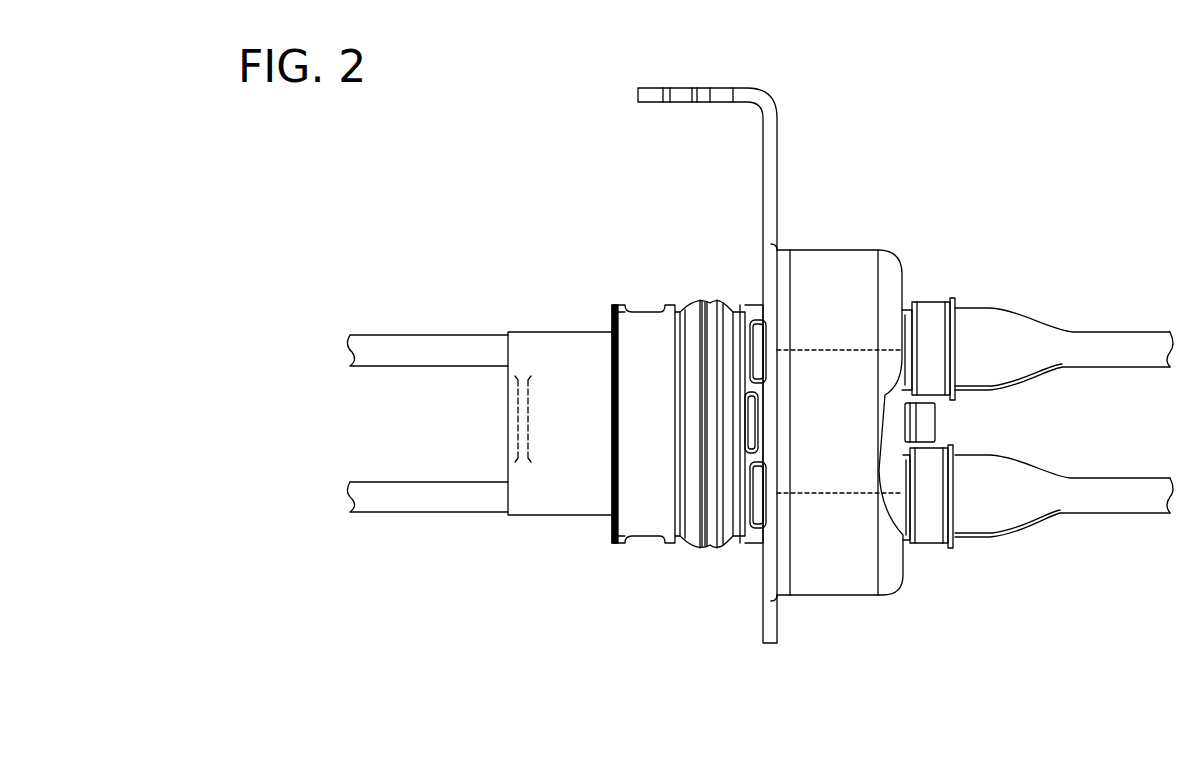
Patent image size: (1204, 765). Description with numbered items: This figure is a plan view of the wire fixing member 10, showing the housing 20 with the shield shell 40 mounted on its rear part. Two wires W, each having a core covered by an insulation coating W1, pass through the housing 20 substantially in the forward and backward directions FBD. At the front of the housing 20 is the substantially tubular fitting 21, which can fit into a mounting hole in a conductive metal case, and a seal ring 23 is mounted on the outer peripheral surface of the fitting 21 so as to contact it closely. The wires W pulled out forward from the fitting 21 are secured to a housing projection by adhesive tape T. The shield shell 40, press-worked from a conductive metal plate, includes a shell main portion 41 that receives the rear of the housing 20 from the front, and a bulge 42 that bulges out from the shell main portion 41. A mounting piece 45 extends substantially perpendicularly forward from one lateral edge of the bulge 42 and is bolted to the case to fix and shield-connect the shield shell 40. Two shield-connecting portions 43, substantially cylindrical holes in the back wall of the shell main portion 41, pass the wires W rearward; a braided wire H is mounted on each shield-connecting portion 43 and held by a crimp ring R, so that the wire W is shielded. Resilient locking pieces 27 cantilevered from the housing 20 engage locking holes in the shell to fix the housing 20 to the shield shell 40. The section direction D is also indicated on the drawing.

The wire fixing member 10 is at (880, 172).
The housing 20 is at (689, 444).
The fitting 21 is at (650, 330).
The seal ring 23 is at (725, 312).
The resilient locking piece 27 is at (940, 418).
The shield shell 40 is at (896, 448).
The shell main portion 41 is at (853, 257).
The bulge 42 is at (734, 344).
The shield-connecting portion 43 is at (906, 540).
The mounting piece 45 is at (745, 92).
The wire W is at (405, 331).
The insulation coating W1 is at (428, 500).
The adhesive tape T is at (563, 350).
The crimp ring R is at (928, 312).
The braided wire H is at (997, 310).
The direction D is at (555, 230).
The forward and backward directions FBD is at (323, 427).